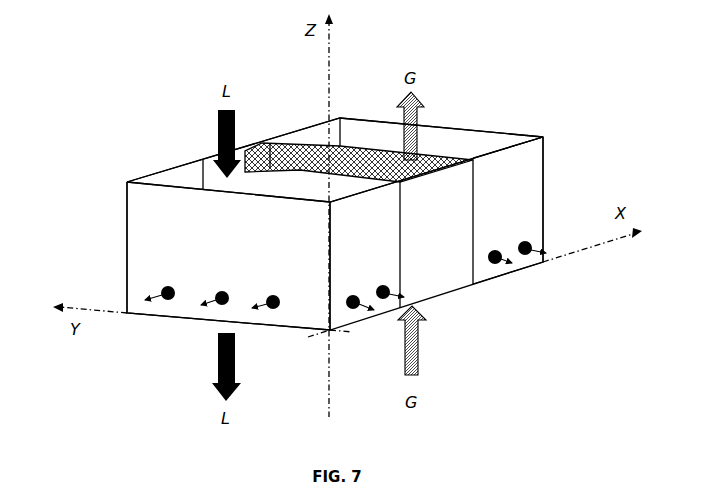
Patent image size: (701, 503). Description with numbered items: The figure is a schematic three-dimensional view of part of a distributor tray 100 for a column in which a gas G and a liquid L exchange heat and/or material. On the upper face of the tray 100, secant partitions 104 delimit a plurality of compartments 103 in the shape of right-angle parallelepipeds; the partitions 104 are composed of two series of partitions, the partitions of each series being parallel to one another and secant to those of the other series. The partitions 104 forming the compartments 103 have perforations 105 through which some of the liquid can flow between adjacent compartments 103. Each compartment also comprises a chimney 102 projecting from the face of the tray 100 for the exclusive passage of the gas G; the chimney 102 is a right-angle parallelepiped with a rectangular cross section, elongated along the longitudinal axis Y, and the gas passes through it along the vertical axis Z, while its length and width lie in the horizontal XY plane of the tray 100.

The tray 100 is at (488, 321).
The chimney 102 is at (440, 168).
The compartment 103 is at (177, 175).
The partition 104 is at (130, 210).
The perforation 105 is at (164, 290).